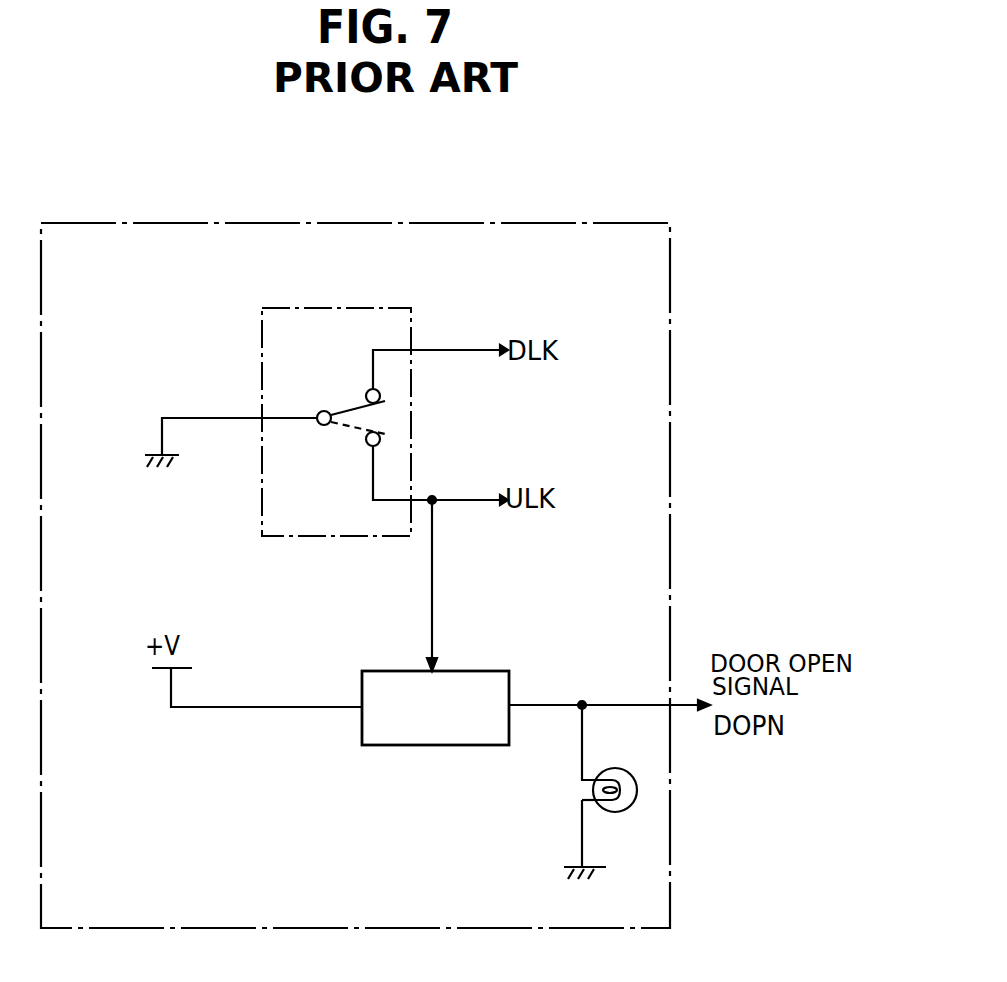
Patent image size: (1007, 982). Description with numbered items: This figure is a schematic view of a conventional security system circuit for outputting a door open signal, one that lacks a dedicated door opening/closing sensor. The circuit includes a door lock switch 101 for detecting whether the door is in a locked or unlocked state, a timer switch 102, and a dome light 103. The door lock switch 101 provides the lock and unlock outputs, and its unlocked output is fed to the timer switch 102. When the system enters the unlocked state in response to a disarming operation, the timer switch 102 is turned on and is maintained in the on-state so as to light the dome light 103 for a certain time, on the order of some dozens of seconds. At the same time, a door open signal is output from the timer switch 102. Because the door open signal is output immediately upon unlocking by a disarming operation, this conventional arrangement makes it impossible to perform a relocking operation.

The door lock switch 101 is at (393, 308).
The timer switch 102 is at (478, 671).
The dome light 103 is at (624, 806).